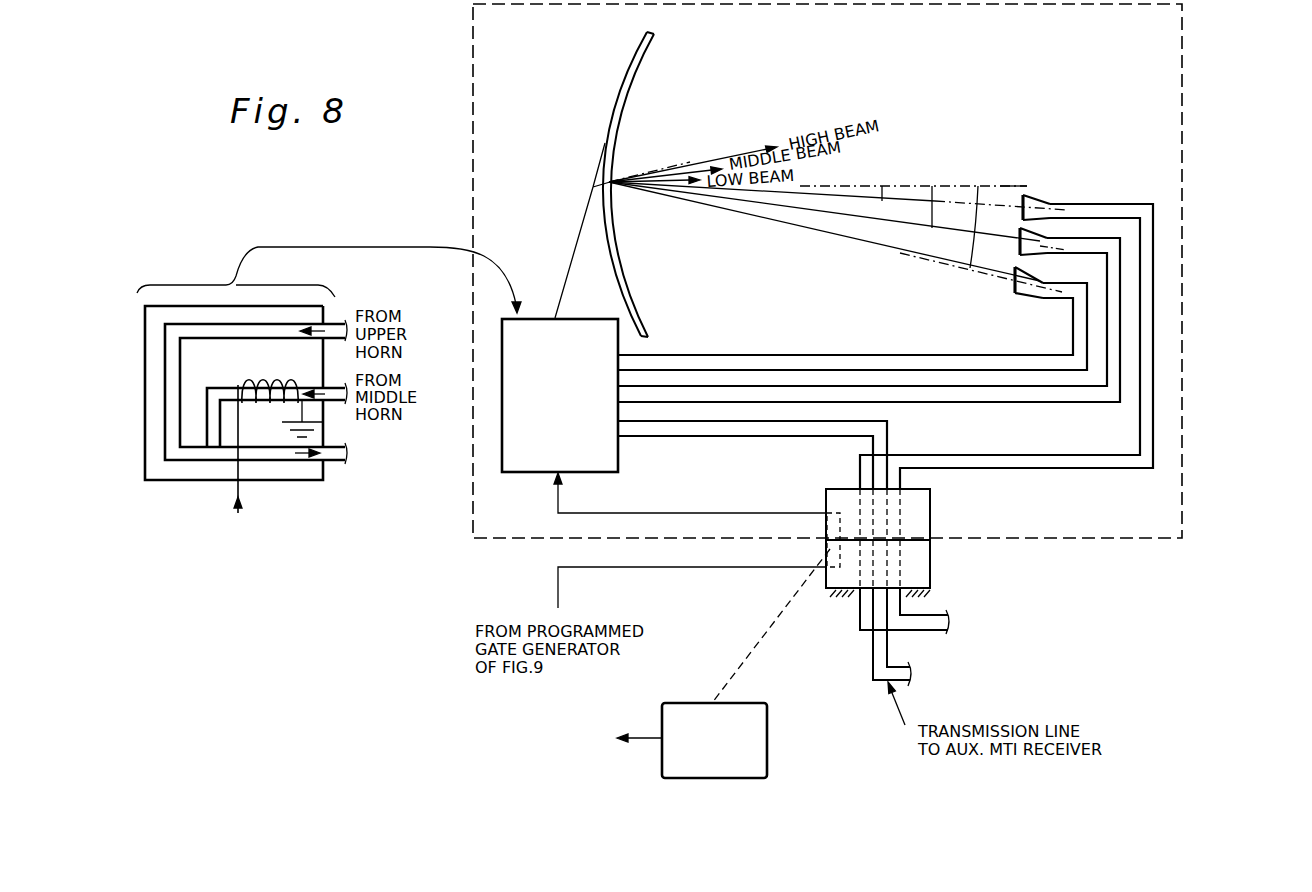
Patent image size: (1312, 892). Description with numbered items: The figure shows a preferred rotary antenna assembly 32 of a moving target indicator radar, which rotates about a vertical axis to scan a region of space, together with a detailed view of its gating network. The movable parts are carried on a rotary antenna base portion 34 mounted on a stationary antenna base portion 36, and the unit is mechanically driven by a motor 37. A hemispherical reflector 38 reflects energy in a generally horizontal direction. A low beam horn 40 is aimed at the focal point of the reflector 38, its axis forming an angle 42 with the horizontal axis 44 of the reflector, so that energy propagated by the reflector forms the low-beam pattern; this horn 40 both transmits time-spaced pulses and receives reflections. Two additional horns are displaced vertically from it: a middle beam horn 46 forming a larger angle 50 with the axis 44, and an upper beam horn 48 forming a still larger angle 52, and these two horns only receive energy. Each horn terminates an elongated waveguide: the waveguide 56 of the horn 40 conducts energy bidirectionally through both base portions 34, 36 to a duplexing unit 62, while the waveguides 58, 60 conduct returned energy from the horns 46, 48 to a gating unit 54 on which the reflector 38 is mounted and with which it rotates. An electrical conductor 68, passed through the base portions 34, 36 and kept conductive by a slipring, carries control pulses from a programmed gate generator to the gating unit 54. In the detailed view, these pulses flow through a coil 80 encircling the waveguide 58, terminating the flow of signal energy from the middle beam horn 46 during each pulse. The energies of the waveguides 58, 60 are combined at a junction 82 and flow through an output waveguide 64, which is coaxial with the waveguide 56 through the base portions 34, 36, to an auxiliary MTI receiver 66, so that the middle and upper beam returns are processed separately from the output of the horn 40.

The antenna assembly 32 is at (1185, 79).
The rotary antenna base portion 34 is at (940, 511).
The stationary antenna base portion 36 is at (944, 562).
The motor 37 is at (767, 752).
The reflector 38 is at (645, 70).
The low beam horn 40 is at (1032, 190).
The angle of the low beam horn axis 42 is at (882, 190).
The horizontal axis of the reflector 44 is at (1010, 185).
The middle beam horn 46 is at (1016, 224).
The upper beam horn 48 is at (1006, 297).
The angle of the middle beam horn axis 50 is at (930, 210).
The angle of the upper beam horn axis 52 is at (978, 220).
The gating unit 54 is at (618, 462).
The waveguide 56 is at (1138, 429).
The waveguide 58 is at (1016, 404).
The waveguide 60 is at (752, 354).
The duplexing unit 62 is at (934, 642).
The output waveguide 64 is at (817, 438).
The auxiliary MTI receiver 66 is at (240, 490).
The electrical conductor 68 is at (737, 513).
The coil 80 is at (278, 382).
The junction 82 is at (213, 450).